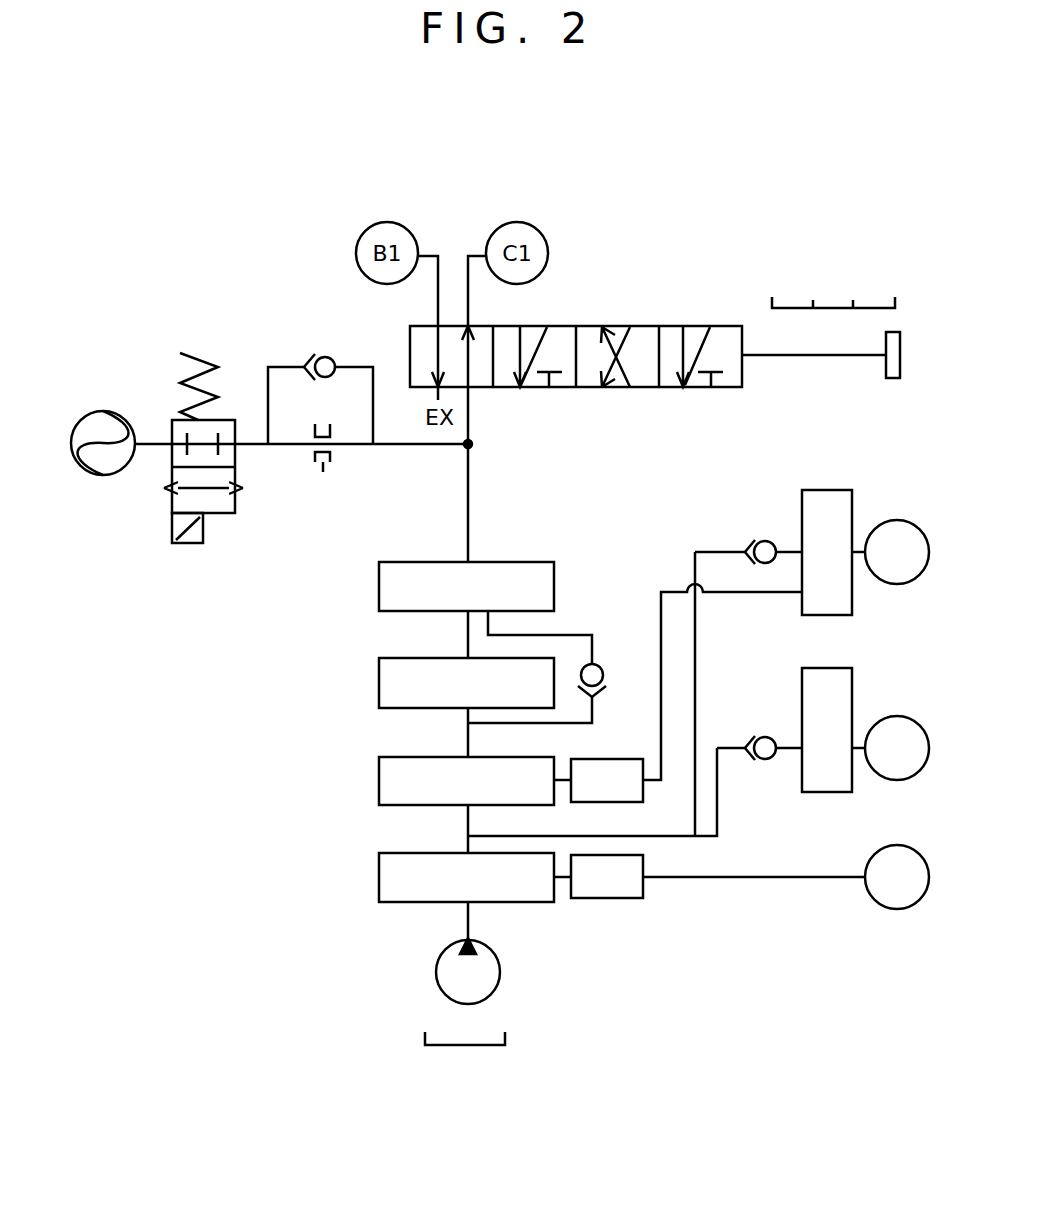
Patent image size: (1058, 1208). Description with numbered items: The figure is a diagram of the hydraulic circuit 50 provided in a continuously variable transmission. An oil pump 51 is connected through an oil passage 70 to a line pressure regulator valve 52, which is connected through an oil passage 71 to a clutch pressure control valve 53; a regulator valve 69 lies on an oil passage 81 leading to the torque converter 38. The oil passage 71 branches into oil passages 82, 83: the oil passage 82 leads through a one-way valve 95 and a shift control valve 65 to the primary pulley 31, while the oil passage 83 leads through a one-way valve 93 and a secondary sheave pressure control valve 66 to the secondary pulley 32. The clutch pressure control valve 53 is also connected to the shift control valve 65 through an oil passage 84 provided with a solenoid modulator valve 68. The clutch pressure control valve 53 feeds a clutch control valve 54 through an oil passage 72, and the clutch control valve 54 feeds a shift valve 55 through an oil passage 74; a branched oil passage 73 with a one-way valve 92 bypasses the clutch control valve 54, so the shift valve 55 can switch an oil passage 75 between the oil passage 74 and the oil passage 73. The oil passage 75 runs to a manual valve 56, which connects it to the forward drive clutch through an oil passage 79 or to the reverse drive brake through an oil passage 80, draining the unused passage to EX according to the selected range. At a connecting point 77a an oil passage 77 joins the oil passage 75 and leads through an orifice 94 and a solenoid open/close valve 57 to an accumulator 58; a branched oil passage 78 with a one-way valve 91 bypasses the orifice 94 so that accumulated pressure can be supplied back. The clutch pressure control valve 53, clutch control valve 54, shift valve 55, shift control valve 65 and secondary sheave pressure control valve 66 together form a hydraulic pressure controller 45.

The primary pulley 31 is at (895, 520).
The secondary pulley 32 is at (895, 717).
The torque converter 38 is at (907, 847).
The hydraulic pressure controller 45 is at (258, 732).
The hydraulic circuit 50 is at (792, 210).
The oil pump 51 is at (500, 968).
The line pressure regulator valve 52 is at (378, 882).
The clutch pressure control valve 53 is at (378, 787).
The clutch control valve 54 is at (378, 688).
The shift valve 55 is at (378, 592).
The manual valve 56 is at (587, 326).
The solenoid open/close valve 57 is at (170, 503).
The accumulator 58 is at (85, 413).
The shift control valve 65 is at (825, 490).
The secondary sheave pressure control valve 66 is at (825, 793).
The solenoid modulator valve 68 is at (627, 758).
The regulator valve 69 is at (623, 900).
The oil passage 70 is at (467, 925).
The oil passage 71 is at (467, 836).
The oil passage 72 is at (467, 740).
The branched oil passage 73 is at (577, 633).
The oil passage 74 is at (467, 640).
The oil passage 75 is at (470, 477).
The oil passage 77 is at (255, 450).
The connecting point 77a is at (470, 444).
The branched oil passage 78 is at (357, 367).
The oil passage 79 is at (470, 305).
The oil passage 80 is at (437, 300).
The oil passage 81 is at (705, 880).
The oil passage 82 is at (717, 548).
The oil passage 83 is at (717, 790).
The oil passage 84 is at (746, 595).
The one-way valve 91 is at (325, 355).
The one-way valve 92 is at (603, 672).
The one-way valve 93 is at (766, 737).
The orifice 94 is at (325, 473).
The one-way valve 95 is at (766, 541).